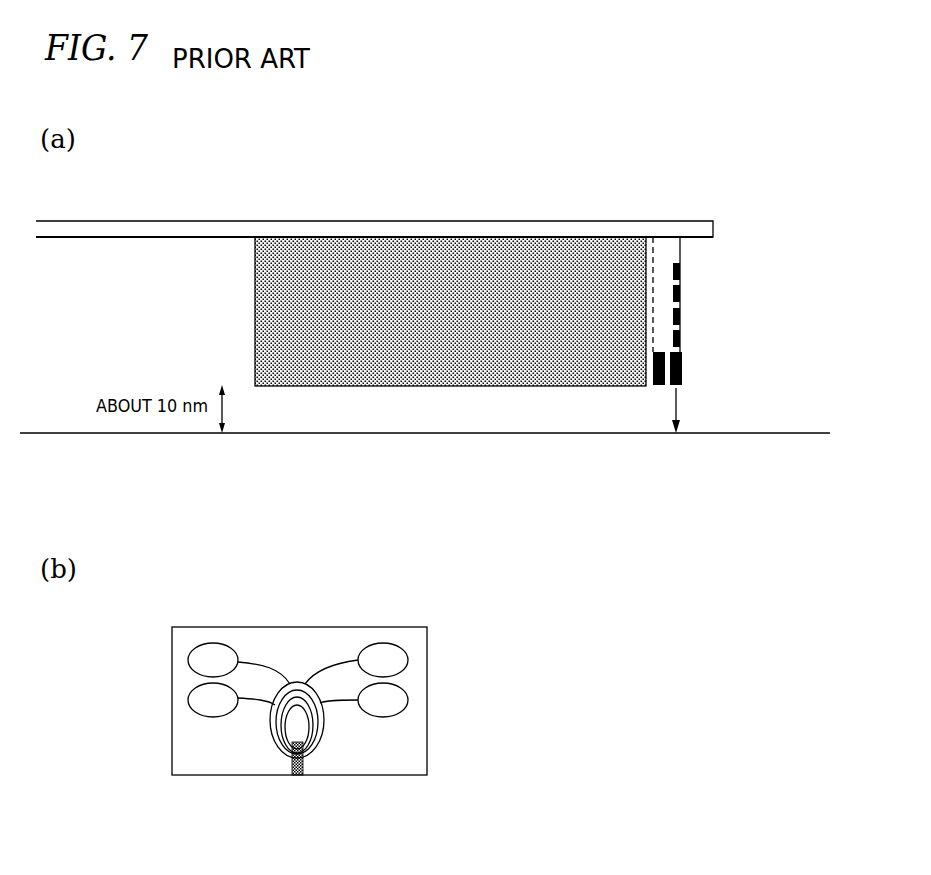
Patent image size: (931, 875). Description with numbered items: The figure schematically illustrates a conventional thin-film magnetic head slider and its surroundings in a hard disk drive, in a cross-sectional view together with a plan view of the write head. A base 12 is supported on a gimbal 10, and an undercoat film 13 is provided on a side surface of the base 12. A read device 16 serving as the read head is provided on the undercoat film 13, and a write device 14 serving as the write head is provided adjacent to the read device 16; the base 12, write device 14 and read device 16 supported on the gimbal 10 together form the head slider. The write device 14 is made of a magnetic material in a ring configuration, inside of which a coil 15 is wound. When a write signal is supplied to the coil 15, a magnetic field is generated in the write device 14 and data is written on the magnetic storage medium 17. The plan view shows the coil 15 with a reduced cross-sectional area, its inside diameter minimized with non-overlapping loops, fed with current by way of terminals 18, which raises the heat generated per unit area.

The gimbal 10 is at (240, 220).
The base 12 is at (443, 386).
The undercoat film 13 is at (647, 386).
The write device 14 is at (685, 386).
The coil 15 is at (683, 272).
The read device 16 is at (661, 386).
The magnetic storage medium 17 is at (53, 450).
The terminals 18 is at (203, 660).